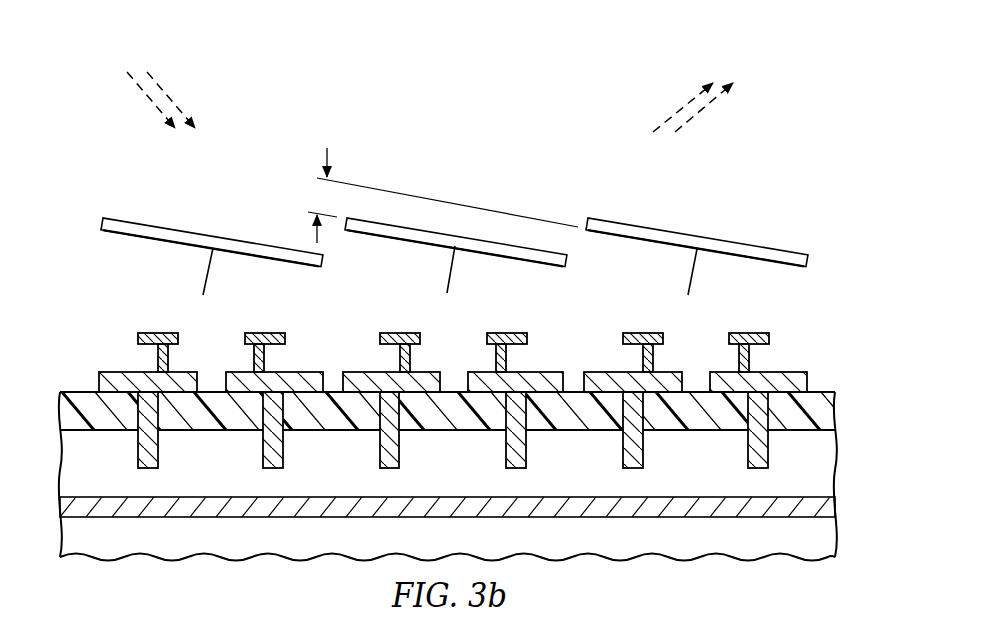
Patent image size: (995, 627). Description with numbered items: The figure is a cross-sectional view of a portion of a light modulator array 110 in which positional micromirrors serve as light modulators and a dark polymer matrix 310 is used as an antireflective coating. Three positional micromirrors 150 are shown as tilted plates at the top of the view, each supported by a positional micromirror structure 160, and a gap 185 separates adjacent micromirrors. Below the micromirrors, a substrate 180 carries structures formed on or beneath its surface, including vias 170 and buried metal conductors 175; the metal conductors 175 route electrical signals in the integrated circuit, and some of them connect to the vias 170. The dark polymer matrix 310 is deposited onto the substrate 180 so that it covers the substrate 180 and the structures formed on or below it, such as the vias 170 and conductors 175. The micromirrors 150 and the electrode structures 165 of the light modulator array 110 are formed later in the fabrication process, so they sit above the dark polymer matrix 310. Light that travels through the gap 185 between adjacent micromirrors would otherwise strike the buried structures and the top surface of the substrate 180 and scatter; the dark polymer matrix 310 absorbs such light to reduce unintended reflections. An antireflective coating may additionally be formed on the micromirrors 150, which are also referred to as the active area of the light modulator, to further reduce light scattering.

The light modulator array 110 is at (485, 120).
The positional micromirror 150 is at (197, 233).
The positional micromirror structure 160 is at (208, 270).
The electrode structure 165 is at (148, 333).
The via 170 is at (138, 446).
The metal conductor 175 is at (216, 497).
The substrate 180 is at (466, 477).
The gap 185 is at (320, 197).
The dark polymer matrix 310 is at (208, 392).